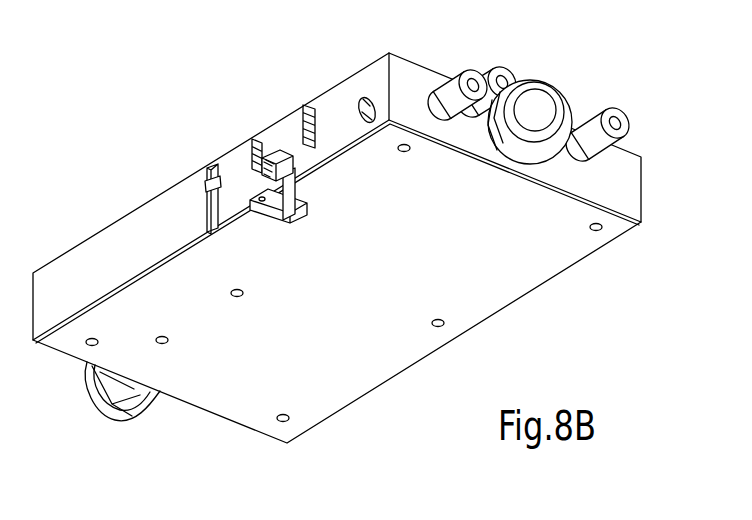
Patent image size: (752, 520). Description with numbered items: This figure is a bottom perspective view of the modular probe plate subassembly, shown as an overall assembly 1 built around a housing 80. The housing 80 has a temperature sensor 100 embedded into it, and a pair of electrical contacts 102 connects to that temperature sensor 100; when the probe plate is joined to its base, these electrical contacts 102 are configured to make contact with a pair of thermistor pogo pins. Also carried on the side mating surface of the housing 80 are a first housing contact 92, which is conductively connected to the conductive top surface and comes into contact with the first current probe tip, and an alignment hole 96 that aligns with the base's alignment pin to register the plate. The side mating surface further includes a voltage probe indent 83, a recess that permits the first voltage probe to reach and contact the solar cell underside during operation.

The connector assembly 1 is at (563, 68).
The housing 80 is at (630, 176).
The voltage probe indent 83 is at (207, 207).
The first housing contact 92 is at (304, 121).
The alignment hole 96 is at (363, 100).
The temperature sensor 100 is at (280, 150).
The electrical contacts 102 is at (266, 152).